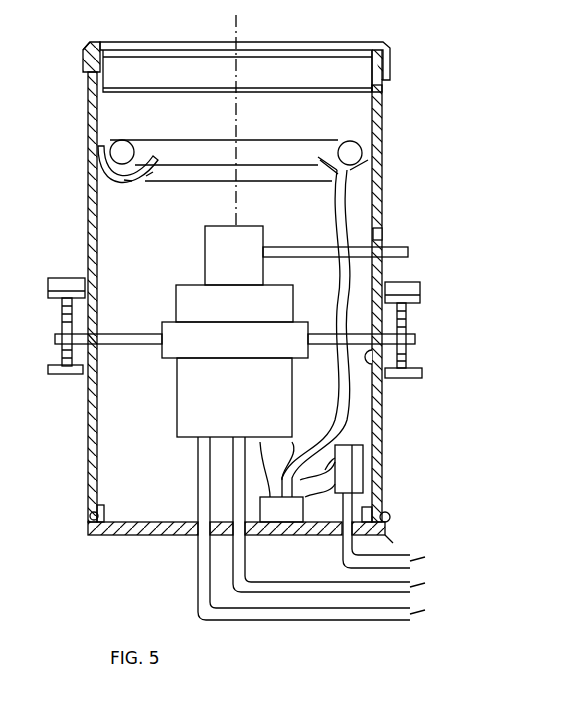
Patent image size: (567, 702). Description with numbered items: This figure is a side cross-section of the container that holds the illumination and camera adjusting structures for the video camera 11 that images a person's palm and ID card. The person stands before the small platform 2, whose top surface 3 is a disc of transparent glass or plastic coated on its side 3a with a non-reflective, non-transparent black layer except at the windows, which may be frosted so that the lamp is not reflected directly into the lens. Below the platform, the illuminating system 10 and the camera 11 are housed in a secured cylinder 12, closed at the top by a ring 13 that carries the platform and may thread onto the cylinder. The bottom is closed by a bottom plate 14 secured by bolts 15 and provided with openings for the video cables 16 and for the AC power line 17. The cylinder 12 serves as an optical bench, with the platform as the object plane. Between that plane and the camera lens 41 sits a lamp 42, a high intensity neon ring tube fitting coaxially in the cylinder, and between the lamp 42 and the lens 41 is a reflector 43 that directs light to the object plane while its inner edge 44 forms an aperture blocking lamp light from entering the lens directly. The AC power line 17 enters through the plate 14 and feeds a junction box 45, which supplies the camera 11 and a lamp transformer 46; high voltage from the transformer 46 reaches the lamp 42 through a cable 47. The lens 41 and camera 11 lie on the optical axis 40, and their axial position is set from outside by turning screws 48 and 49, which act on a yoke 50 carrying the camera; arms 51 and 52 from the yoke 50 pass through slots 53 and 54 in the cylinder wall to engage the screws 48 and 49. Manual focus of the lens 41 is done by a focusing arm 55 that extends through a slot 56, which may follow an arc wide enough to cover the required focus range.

The platform 2 is at (80, 424).
The top surface 3 is at (136, 42).
The side 3a is at (280, 66).
The illuminating system 10 is at (130, 178).
The video camera 11 is at (177, 410).
The cylinder 12 is at (88, 208).
The ring 13 is at (84, 47).
The bottom plate 14 is at (135, 533).
The bolts 15 is at (90, 512).
The video cables 16 is at (190, 556).
The AC power line 17 is at (388, 540).
The optical axis 40 is at (230, 32).
The camera lens 41 is at (205, 252).
The lamp 42 is at (118, 142).
The reflector 43 is at (150, 174).
The inner edge 44 is at (166, 150).
The junction box 45 is at (362, 452).
The lamp transformer 46 is at (264, 497).
The cable 47 is at (338, 426).
The screw 48 is at (60, 314).
The screw 49 is at (405, 308).
The yoke 50 is at (168, 302).
The arm 51 is at (118, 344).
The arm 52 is at (325, 345).
The slot 53 is at (98, 330).
The slot 54 is at (374, 364).
The focusing arm 55 is at (287, 247).
The slot 56 is at (383, 240).